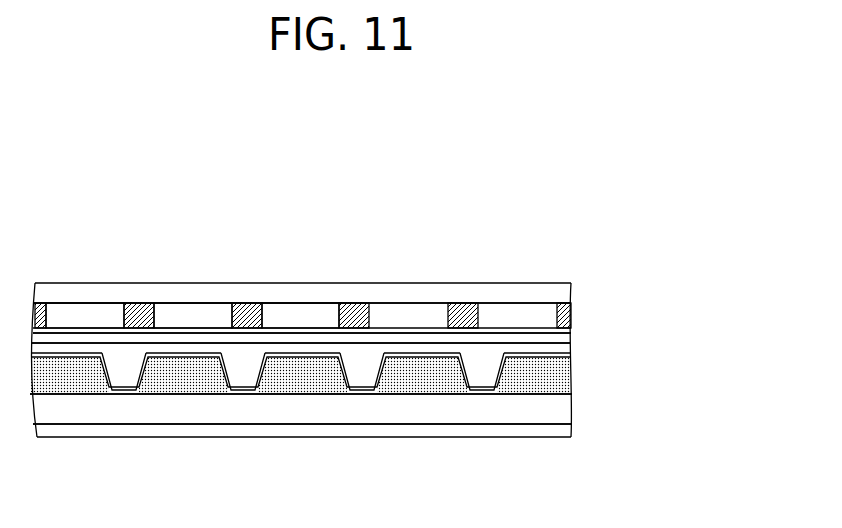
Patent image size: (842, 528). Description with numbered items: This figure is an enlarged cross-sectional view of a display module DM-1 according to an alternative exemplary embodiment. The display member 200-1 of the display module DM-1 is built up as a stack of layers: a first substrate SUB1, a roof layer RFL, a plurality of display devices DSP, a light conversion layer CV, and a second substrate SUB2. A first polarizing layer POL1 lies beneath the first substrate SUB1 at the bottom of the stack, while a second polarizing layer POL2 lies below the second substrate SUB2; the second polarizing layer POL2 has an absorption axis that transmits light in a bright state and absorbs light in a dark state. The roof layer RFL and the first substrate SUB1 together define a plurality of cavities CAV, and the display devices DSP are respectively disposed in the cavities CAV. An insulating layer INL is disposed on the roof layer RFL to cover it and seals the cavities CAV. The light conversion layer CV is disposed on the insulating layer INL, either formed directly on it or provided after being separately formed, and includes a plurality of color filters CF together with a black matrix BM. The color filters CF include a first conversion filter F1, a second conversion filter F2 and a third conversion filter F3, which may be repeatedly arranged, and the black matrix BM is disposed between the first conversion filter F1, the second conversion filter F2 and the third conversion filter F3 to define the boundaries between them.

The display module DM-1 is at (503, 187).
The display member 200-1 is at (672, 285).
The second substrate SUB2 is at (570, 290).
The light conversion layer CV is at (570, 312).
The black matrix BM is at (465, 312).
The color filters CF is at (320, 218).
The first conversion filter F1 is at (88, 312).
The second conversion filter F2 is at (192, 312).
The third conversion filter F3 is at (298, 312).
The second polarizing layer POL2 is at (570, 334).
The insulating layer INL is at (570, 347).
The roof layer RFL is at (570, 358).
The cavities CAV is at (387, 372).
The display devices DSP is at (570, 380).
The first substrate SUB1 is at (568, 410).
The first polarizing layer POL1 is at (568, 433).